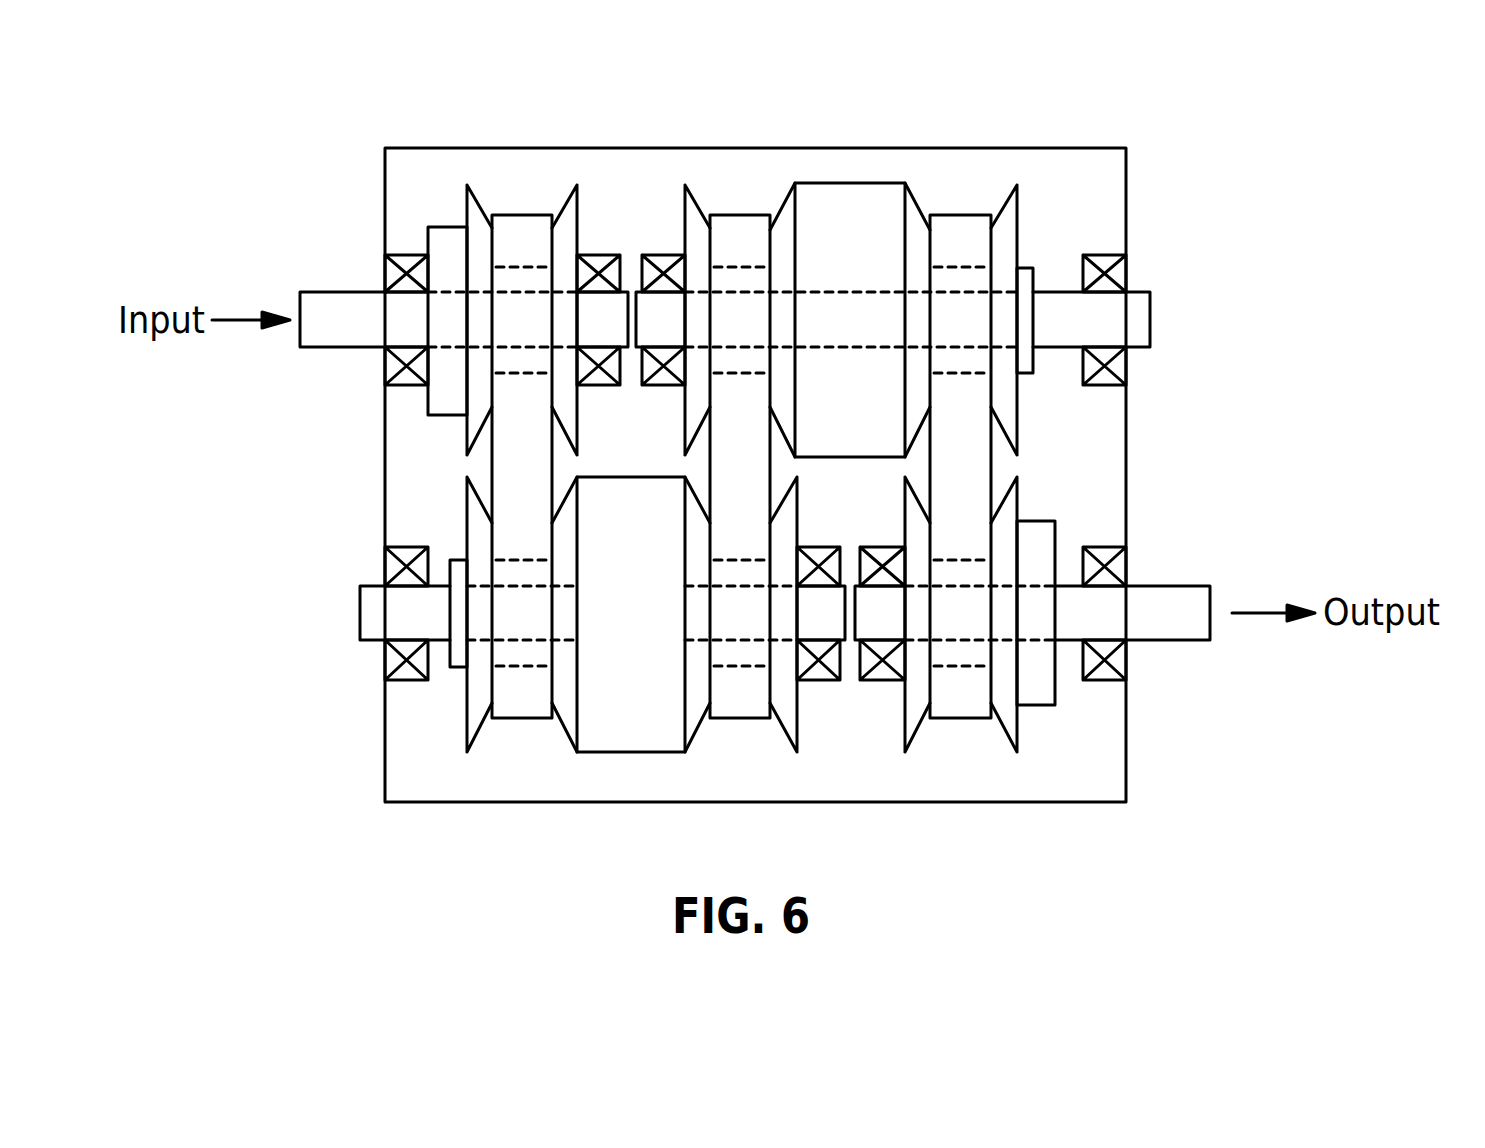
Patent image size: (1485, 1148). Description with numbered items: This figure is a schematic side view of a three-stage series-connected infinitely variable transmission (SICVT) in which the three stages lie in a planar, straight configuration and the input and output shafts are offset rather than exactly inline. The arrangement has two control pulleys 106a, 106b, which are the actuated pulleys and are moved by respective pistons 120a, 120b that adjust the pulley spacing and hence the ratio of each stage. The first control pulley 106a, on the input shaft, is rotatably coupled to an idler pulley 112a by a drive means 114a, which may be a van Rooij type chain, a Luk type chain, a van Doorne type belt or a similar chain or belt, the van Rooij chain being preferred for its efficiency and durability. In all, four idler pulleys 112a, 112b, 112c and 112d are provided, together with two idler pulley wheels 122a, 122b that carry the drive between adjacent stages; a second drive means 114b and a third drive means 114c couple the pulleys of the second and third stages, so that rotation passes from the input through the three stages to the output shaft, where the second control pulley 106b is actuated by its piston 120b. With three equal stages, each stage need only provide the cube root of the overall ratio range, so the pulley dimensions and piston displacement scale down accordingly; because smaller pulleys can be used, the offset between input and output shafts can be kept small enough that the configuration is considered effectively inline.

The control pulley 106a is at (466, 208).
The control pulley 106b is at (1001, 725).
The idler pulley 112a is at (482, 727).
The idler pulley 112b is at (784, 723).
The idler pulley 112c is at (708, 230).
The idler pulley 112d is at (996, 236).
The drive means 114a is at (517, 215).
The drive means 114b is at (758, 215).
The drive means 114c is at (950, 215).
The piston 120a is at (435, 418).
The piston 120b is at (1043, 707).
The idler pulley wheel 122a is at (635, 753).
The idler pulley wheel 122b is at (815, 183).